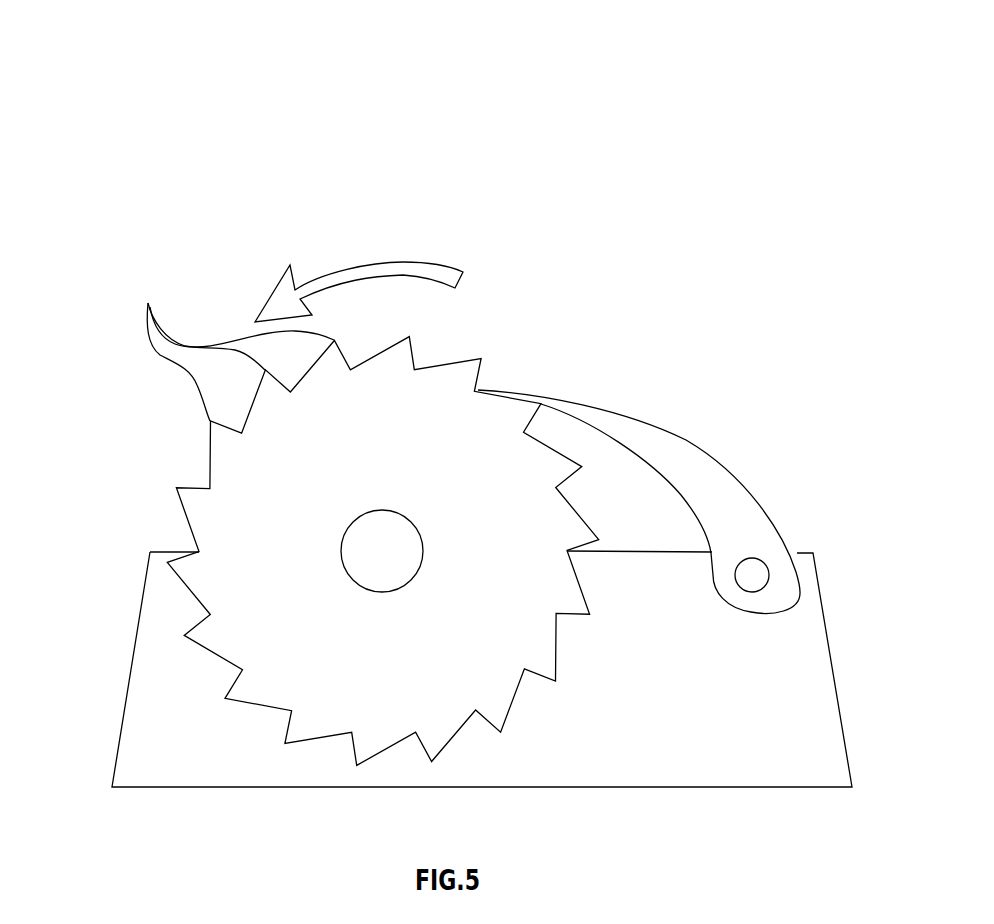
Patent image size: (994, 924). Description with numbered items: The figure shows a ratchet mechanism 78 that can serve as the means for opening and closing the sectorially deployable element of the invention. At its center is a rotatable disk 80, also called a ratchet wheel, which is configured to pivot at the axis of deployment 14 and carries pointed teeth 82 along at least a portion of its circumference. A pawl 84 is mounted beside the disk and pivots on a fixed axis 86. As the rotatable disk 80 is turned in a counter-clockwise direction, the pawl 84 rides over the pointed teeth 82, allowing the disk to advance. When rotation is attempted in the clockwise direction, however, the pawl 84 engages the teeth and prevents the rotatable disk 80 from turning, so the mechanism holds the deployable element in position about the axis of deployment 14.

The ratchet mechanism 78 is at (635, 147).
The rotatable disk 80 is at (262, 470).
The pointed teeth 82 is at (236, 349).
The pawl 84 is at (680, 450).
The fixed axis 86 is at (753, 573).
The axis of deployment 14 is at (357, 543).